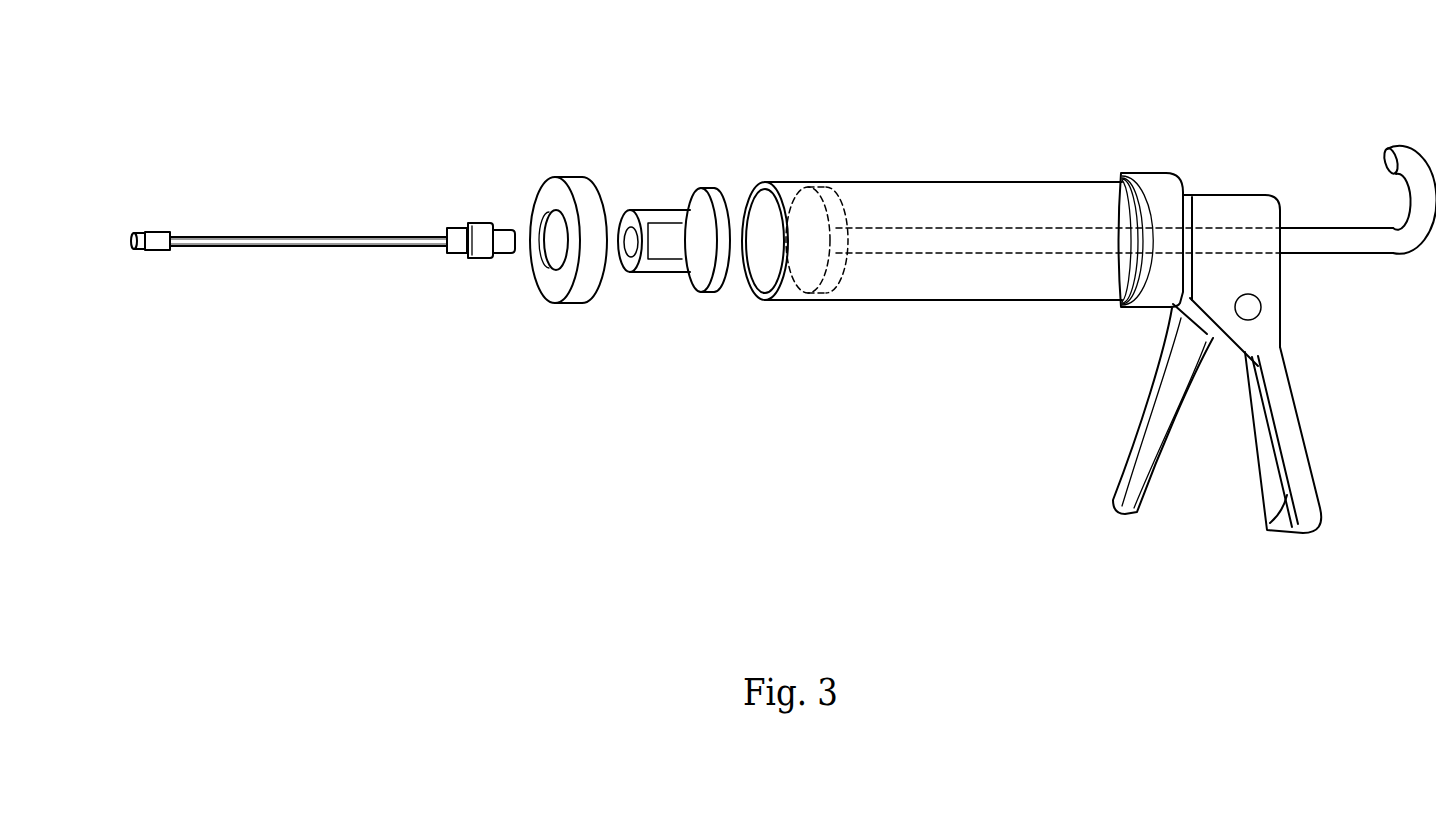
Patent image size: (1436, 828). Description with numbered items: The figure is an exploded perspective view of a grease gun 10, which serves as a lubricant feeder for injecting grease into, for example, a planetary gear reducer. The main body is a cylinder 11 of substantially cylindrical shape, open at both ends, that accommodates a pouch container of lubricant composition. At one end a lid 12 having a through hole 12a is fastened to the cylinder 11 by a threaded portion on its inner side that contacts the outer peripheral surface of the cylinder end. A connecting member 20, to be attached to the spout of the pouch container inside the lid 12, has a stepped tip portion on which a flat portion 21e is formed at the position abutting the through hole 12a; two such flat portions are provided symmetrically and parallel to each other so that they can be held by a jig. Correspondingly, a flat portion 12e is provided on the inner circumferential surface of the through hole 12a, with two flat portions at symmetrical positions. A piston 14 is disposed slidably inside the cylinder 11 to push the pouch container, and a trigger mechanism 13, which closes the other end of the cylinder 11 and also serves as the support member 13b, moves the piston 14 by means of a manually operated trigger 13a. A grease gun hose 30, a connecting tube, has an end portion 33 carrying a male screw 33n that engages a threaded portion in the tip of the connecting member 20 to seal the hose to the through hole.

The grease gun 10 is at (922, 154).
The cylinder 11 is at (977, 293).
The lid 12 is at (553, 242).
The through hole 12a is at (551, 268).
The flat portion 12e is at (547, 226).
The trigger mechanism 13 is at (1218, 536).
The trigger 13a is at (1138, 500).
The support member 13b is at (1150, 304).
The piston 14 is at (813, 295).
The connecting member 20 is at (674, 242).
The flat portion 21e is at (662, 262).
The grease gun hose 30 is at (323, 163).
The end portion 33 is at (440, 163).
The male screw 33n is at (505, 223).